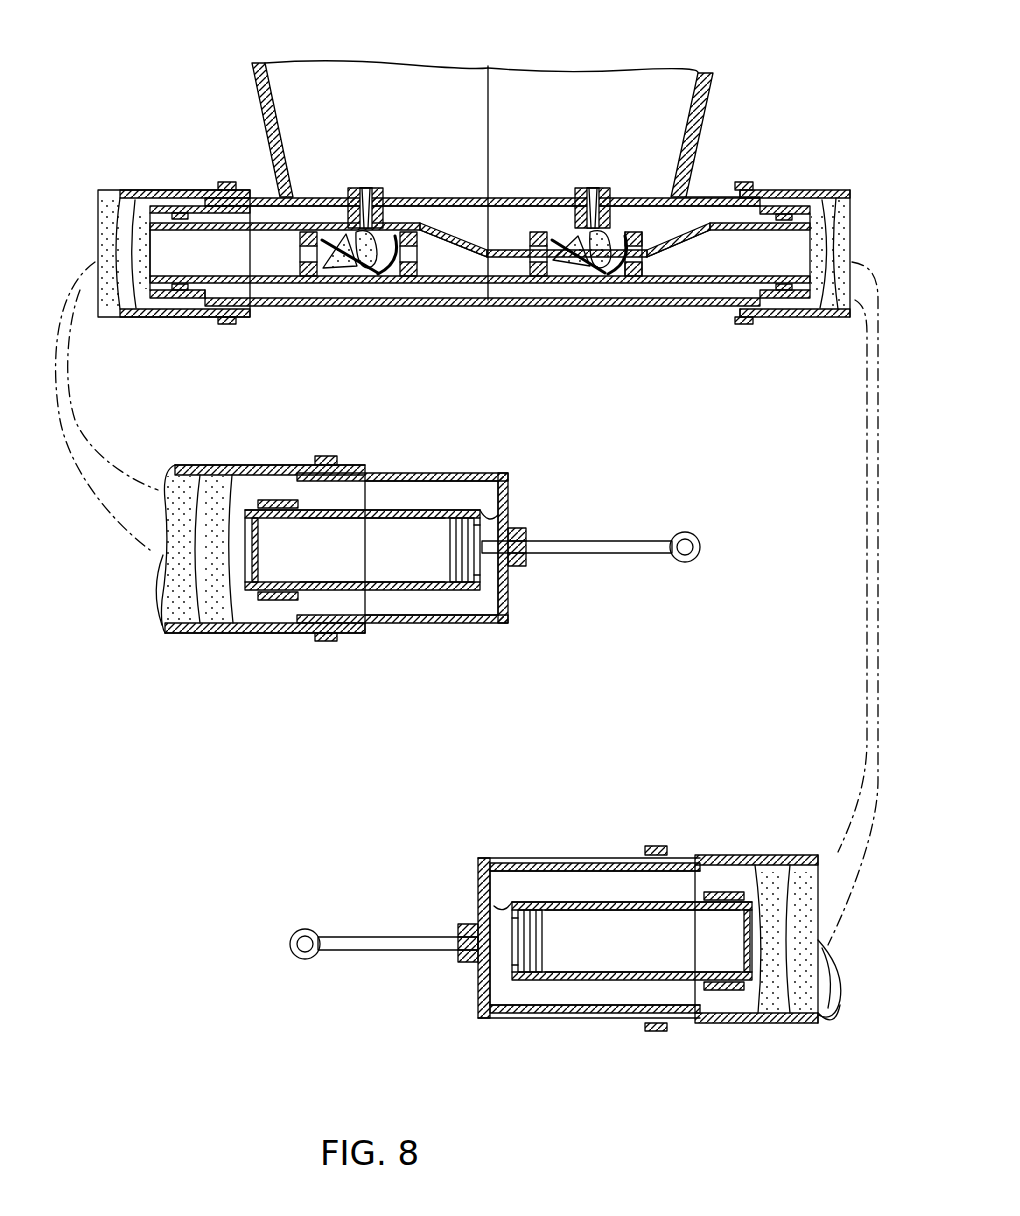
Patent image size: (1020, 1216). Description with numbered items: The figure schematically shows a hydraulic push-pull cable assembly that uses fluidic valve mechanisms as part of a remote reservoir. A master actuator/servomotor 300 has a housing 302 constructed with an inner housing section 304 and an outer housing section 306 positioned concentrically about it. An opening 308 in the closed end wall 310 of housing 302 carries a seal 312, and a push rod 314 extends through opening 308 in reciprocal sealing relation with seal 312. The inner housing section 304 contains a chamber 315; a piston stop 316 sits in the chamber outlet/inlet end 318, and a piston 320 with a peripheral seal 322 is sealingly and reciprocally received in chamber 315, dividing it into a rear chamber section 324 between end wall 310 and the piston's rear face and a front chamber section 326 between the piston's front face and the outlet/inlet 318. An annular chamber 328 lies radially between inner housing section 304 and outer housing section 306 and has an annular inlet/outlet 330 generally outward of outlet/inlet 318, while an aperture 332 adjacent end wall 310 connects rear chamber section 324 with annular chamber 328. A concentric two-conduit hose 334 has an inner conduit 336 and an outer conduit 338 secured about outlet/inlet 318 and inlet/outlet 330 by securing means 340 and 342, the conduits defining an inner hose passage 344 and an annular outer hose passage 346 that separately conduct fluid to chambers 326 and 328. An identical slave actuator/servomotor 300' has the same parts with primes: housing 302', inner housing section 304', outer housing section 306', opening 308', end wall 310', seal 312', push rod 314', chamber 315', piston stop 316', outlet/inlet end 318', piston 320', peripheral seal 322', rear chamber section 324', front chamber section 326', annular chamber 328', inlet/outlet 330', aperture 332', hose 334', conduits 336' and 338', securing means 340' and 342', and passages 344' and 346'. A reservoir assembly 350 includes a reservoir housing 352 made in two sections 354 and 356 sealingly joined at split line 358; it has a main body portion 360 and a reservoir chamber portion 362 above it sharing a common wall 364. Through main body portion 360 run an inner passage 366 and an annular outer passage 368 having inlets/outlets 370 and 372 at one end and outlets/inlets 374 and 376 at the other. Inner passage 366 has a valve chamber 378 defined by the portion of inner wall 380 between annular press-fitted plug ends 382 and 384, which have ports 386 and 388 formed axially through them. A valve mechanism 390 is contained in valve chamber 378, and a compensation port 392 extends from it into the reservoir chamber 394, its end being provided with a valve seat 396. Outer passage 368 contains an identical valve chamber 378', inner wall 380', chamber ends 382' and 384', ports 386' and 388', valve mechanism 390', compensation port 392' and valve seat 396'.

The actuator/servomotor 300 is at (242, 534).
The actuator/servomotor 300' is at (512, 938).
The housing 302 is at (520, 512).
The housing 302' is at (556, 918).
The inner housing section 304 is at (390, 578).
The inner housing section 304' is at (642, 987).
The outer housing section 306 is at (431, 579).
The outer housing section 306' is at (595, 982).
The opening 308 is at (577, 580).
The opening 308' is at (398, 958).
The closed end wall 310 is at (542, 527).
The closed end wall 310' is at (448, 955).
The seal 312 is at (569, 565).
The seal 312' is at (441, 972).
The push rod 314 is at (682, 524).
The push rod 314' is at (310, 968).
The chamber 315 is at (372, 476).
The chamber 315' is at (642, 889).
The piston stop 316 is at (299, 550).
The piston stop 316' is at (733, 894).
The chamber outlet/inlet end 318 is at (349, 601).
The chamber outlet/inlet end 318' is at (747, 911).
The piston 320 is at (481, 587).
The piston 320' is at (492, 986).
The peripheral seal 322 is at (510, 542).
The peripheral seal 322' is at (523, 993).
The rear chamber section 324 is at (525, 586).
The rear chamber section 324' is at (438, 915).
The front chamber section 326 is at (372, 509).
The front chamber section 326' is at (632, 882).
The annular chamber 328 is at (362, 460).
The annular chamber 328' is at (632, 999).
The annular inlet/outlet 330 is at (400, 584).
The annular inlet/outlet 330' is at (738, 905).
The aperture 332 is at (480, 505).
The aperture 332' is at (506, 895).
The concentric two-conduit hose 334 is at (270, 433).
The concentric two-conduit hose 334' is at (798, 915).
The inner conduit 336 is at (210, 571).
The inner conduit 336' is at (793, 961).
The outer conduit 338 is at (189, 525).
The outer conduit 338' is at (827, 1015).
The securing means 340 is at (267, 608).
The securing means 340' is at (750, 973).
The securing means 342 is at (345, 586).
The securing means 342' is at (679, 979).
The inner hose passage 344 is at (153, 625).
The inner hose passage 344' is at (857, 997).
The annular outer hose passage 346 is at (265, 529).
The annular outer hose passage 346' is at (851, 1058).
The reservoir assembly 350 is at (222, 136).
The reservoir housing 352 is at (250, 92).
The housing section 354 is at (272, 62).
The housing section 356 is at (700, 100).
The split line 358 is at (494, 66).
The main body portion 360 is at (760, 192).
The reservoir chamber portion 362 is at (712, 152).
The common wall 364 is at (462, 198).
The inner passage 366 is at (212, 212).
The annular outer passage 368 is at (118, 190).
The inlet/outlet 370 is at (192, 296).
The inlet/outlet 372 is at (250, 300).
The outlet/inlet 374 is at (760, 252).
The outlet/inlet 376 is at (790, 198).
The valve chamber 378 is at (480, 306).
The valve chamber 378' is at (591, 187).
The inner wall 380 is at (358, 284).
The inner wall 380' is at (573, 286).
The valve chamber end 382 is at (218, 241).
The valve chamber end 382' is at (526, 202).
The valve chamber end 384 is at (447, 210).
The valve chamber end 384' is at (672, 201).
The port 386 is at (285, 244).
The port 386' is at (563, 207).
The port 388 is at (453, 235).
The port 388' is at (698, 206).
The valve mechanism 390 is at (361, 290).
The valve mechanism 390' is at (623, 284).
The compensation port 392 is at (351, 178).
The compensation port 392' is at (614, 163).
The reservoir chamber 394 is at (416, 78).
The valve seat 396 is at (385, 168).
The valve seat 396' is at (606, 161).